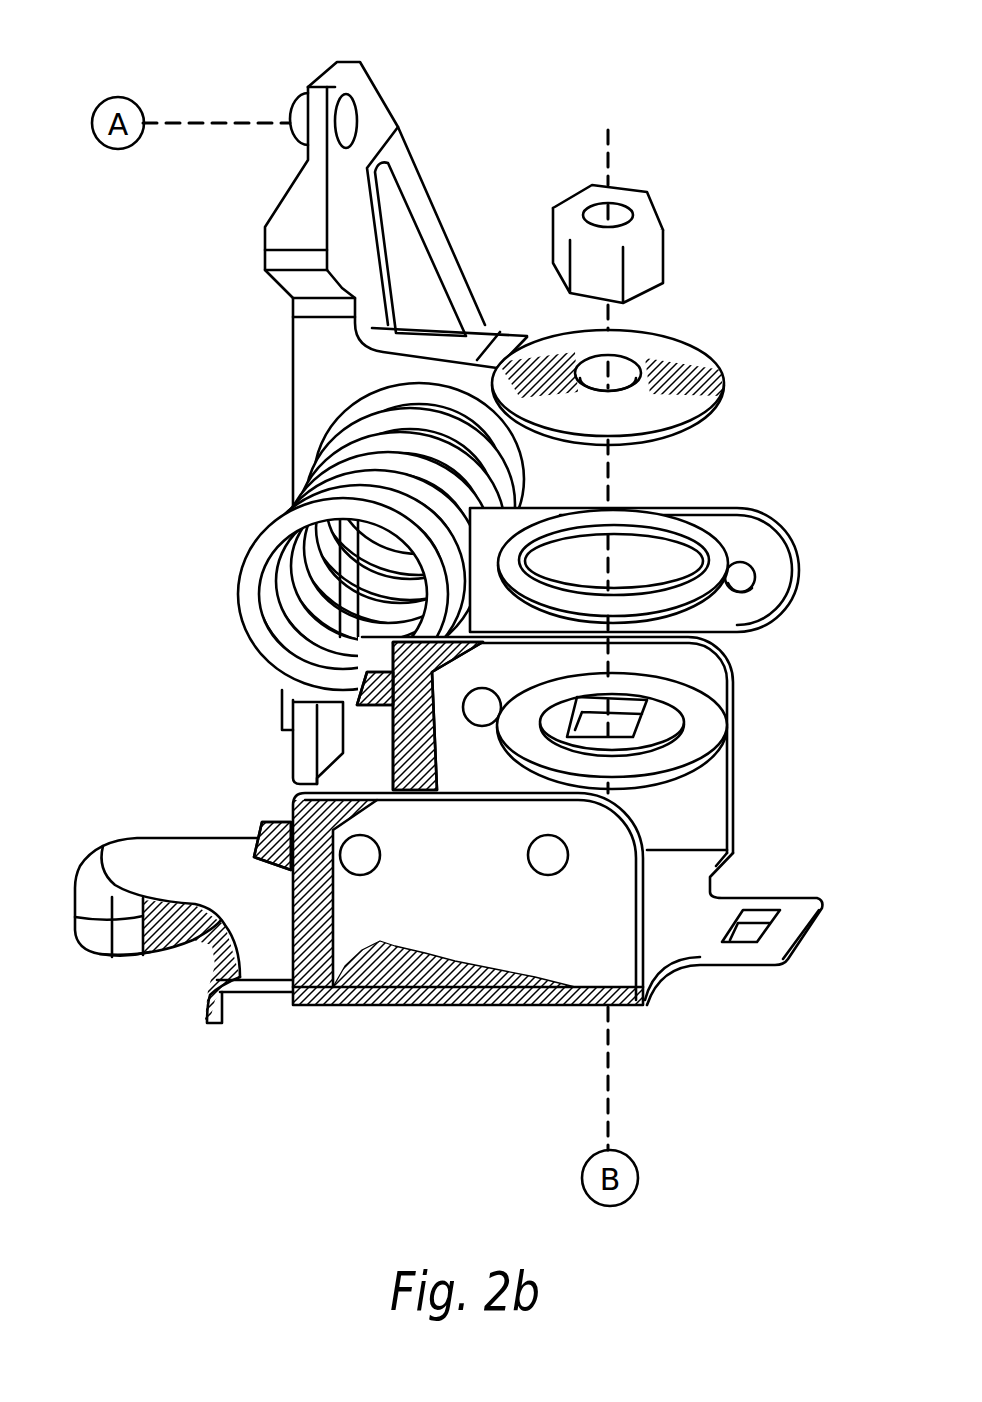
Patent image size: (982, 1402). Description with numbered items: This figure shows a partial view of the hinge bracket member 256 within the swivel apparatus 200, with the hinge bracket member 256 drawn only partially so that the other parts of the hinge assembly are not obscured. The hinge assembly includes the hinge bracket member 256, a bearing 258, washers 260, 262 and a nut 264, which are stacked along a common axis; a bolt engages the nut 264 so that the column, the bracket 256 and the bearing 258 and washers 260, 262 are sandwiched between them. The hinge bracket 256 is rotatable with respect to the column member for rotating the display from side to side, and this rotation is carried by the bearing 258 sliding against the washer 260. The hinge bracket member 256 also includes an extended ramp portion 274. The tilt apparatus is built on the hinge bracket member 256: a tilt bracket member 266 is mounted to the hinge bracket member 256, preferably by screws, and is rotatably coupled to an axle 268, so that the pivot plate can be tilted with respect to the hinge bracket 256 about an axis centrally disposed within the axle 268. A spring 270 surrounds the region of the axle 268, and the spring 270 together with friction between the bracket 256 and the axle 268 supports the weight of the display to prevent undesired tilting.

The swivel apparatus 200 is at (188, 84).
The hinge bracket member 256 is at (735, 820).
The bearing 258 is at (727, 723).
The washer 260 is at (647, 507).
The washer 262 is at (724, 378).
The nut 264 is at (663, 257).
The tilt bracket member 266 is at (757, 628).
The axle 268 is at (380, 403).
The spring 270 is at (240, 566).
The extended ramp portion 274 is at (118, 962).